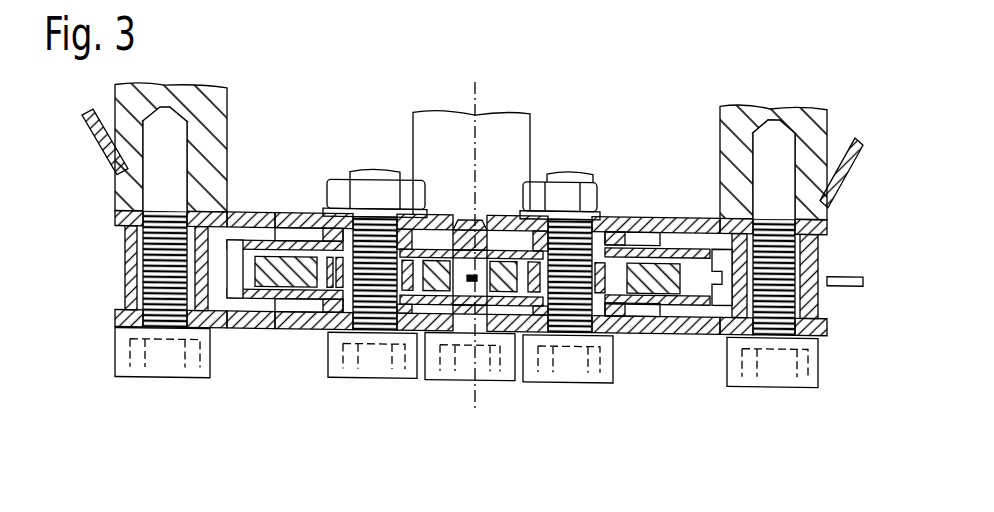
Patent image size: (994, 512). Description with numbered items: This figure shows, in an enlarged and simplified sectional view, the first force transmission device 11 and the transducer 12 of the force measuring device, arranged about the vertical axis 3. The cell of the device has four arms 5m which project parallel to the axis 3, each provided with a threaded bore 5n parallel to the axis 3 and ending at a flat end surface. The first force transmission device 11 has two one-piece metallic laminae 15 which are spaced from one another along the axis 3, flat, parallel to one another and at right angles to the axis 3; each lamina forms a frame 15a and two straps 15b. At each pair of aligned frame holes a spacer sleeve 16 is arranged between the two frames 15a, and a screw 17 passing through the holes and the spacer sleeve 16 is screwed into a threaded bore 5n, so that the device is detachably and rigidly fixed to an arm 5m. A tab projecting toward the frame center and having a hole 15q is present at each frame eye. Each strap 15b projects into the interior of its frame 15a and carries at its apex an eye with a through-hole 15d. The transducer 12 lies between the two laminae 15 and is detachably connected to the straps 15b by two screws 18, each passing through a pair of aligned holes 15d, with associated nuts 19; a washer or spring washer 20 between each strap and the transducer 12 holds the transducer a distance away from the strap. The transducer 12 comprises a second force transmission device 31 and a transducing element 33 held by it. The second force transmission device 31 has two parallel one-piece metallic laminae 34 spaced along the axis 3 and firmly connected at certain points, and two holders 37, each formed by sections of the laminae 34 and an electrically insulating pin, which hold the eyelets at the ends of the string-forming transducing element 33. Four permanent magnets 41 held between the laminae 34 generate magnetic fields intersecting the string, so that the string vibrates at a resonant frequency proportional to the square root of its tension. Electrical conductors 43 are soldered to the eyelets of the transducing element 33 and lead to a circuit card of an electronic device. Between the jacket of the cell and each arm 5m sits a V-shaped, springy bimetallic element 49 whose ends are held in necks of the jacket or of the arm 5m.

The vertical axis 3 is at (472, 100).
The arm 5m is at (218, 107).
The threaded bore 5n is at (187, 132).
The first force transmission device 11 is at (114, 214).
The transducer 12 is at (243, 330).
The lamina 15 is at (235, 211).
The frame 15a is at (125, 225).
The strap 15b is at (320, 211).
The through-hole 15d is at (365, 178).
The hole 15q is at (663, 220).
The spacer sleeve 16 is at (125, 270).
The screw 17 is at (158, 377).
The screw 18 is at (408, 332).
The nut 19 is at (337, 183).
The spring washer 20 is at (653, 220).
The second force transmission device 31 is at (267, 212).
The transducing element 33 is at (502, 330).
The lamina 34 is at (708, 220).
The holder 37 is at (482, 207).
The permanent magnet 41 is at (448, 212).
The electrical conductor 43 is at (847, 278).
The bimetallic element 49 is at (92, 138).